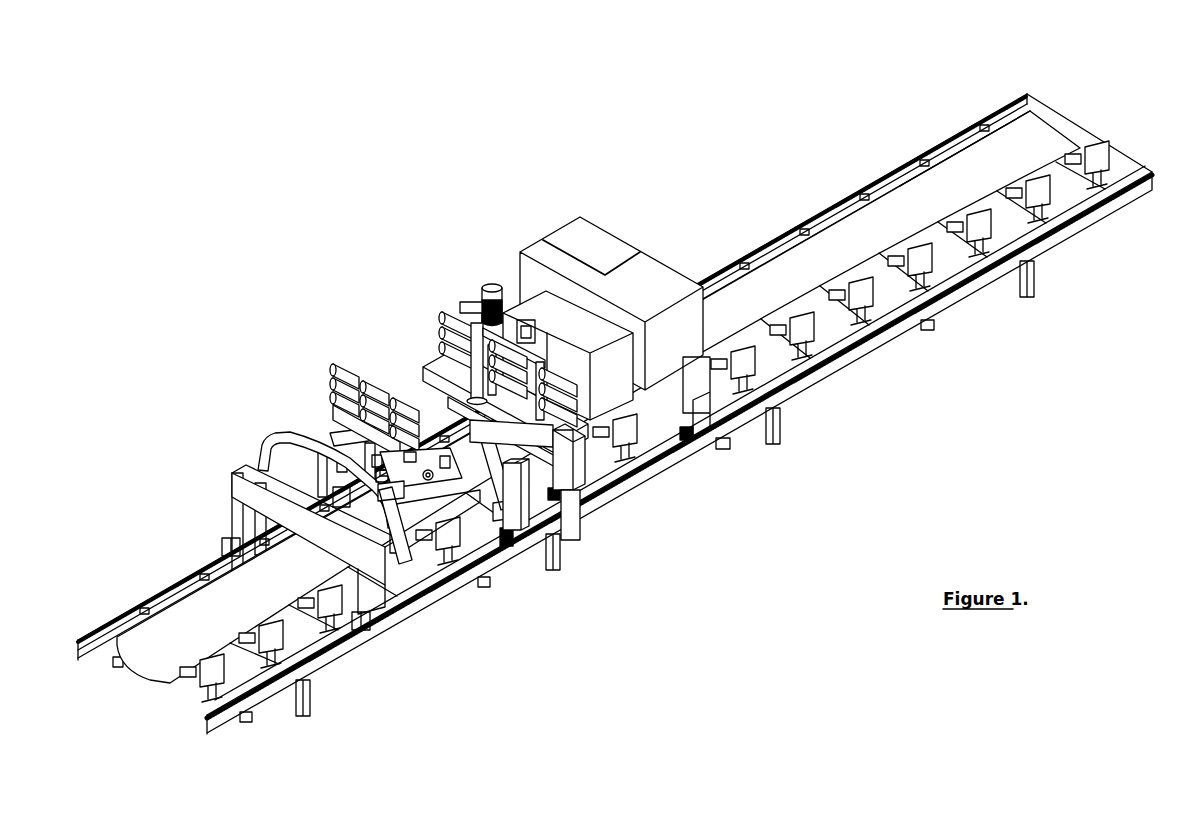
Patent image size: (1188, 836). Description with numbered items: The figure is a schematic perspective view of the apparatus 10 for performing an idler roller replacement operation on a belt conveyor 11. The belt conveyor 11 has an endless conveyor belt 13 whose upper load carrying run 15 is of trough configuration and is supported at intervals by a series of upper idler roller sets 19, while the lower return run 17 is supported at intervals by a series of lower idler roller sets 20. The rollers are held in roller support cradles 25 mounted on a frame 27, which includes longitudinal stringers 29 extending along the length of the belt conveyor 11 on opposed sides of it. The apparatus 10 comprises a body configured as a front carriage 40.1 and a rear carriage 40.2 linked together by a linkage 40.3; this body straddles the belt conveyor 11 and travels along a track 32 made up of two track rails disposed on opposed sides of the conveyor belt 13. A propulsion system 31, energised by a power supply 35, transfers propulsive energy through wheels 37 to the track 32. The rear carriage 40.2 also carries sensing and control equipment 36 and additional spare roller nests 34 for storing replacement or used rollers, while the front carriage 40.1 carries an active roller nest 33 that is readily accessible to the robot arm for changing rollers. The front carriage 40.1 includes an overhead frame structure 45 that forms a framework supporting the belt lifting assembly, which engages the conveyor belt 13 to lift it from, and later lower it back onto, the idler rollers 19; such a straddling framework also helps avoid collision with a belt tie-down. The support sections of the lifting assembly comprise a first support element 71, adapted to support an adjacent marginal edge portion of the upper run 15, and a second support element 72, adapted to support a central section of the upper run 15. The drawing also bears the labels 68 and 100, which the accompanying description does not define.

The apparatus 10 is at (323, 266).
The belt conveyor 11 is at (990, 356).
The conveyor belt 13 is at (948, 165).
The upper load carrying run 15 is at (1077, 148).
The lower return run 17 is at (1067, 190).
The upper idler roller sets 19 is at (847, 292).
The lower idler roller sets 20 is at (722, 447).
The roller support cradles 25 is at (1042, 225).
The frame 27 is at (913, 317).
The longitudinal stringers 29 is at (82, 638).
The propulsion system 31 is at (505, 237).
The track 32 is at (813, 213).
The active roller nest 33 is at (322, 391).
The spare roller nests 34 is at (424, 316).
The power supply 35 is at (626, 217).
The sensing and control equipment 36 is at (614, 391).
The wheels 37 is at (214, 544).
The front carriage 40.1 is at (238, 396).
The rear carriage 40.2 is at (578, 177).
The linkage 40.3 is at (555, 501).
The overhead frame structure 45 is at (308, 515).
The tool holder 68 is at (280, 412).
The first support element 71 is at (262, 465).
The second support element 72 is at (401, 562).
The robot 100 is at (435, 497).